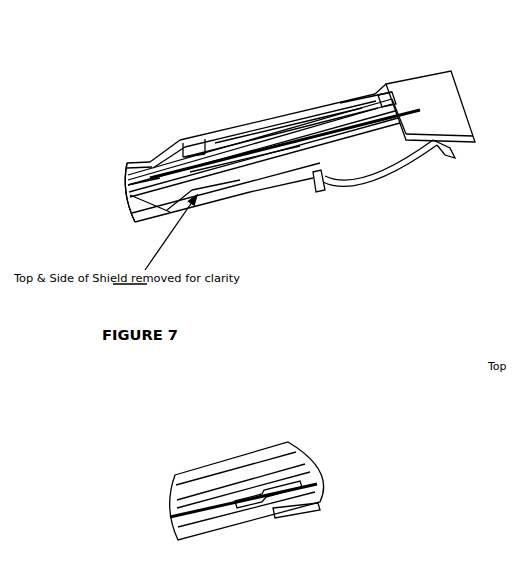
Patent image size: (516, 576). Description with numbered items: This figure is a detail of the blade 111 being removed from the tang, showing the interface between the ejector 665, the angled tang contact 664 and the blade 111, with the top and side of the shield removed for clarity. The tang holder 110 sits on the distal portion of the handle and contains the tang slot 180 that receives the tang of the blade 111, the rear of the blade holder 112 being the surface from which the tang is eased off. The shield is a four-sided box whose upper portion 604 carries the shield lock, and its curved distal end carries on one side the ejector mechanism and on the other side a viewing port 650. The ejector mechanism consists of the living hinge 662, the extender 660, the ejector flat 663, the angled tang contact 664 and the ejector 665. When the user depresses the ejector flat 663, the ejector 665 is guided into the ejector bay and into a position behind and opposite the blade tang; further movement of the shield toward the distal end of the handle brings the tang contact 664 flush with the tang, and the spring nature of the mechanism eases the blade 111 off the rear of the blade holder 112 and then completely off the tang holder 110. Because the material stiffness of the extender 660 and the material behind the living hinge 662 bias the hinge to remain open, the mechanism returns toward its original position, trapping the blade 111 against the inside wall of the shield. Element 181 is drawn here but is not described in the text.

The tang holder 110 is at (279, 127).
The blade 111 is at (133, 182).
The blade holder 112 is at (360, 110).
The tang slot 180 is at (310, 120).
The second contact 181 is at (272, 152).
The upper portion of shield 604 is at (445, 88).
The viewing port 650 is at (180, 133).
The extender 660 is at (383, 187).
The living hinge 662 is at (448, 152).
The ejector flat 663 is at (326, 193).
The angled tang contact 664 is at (305, 147).
The ejector 665 is at (263, 493).